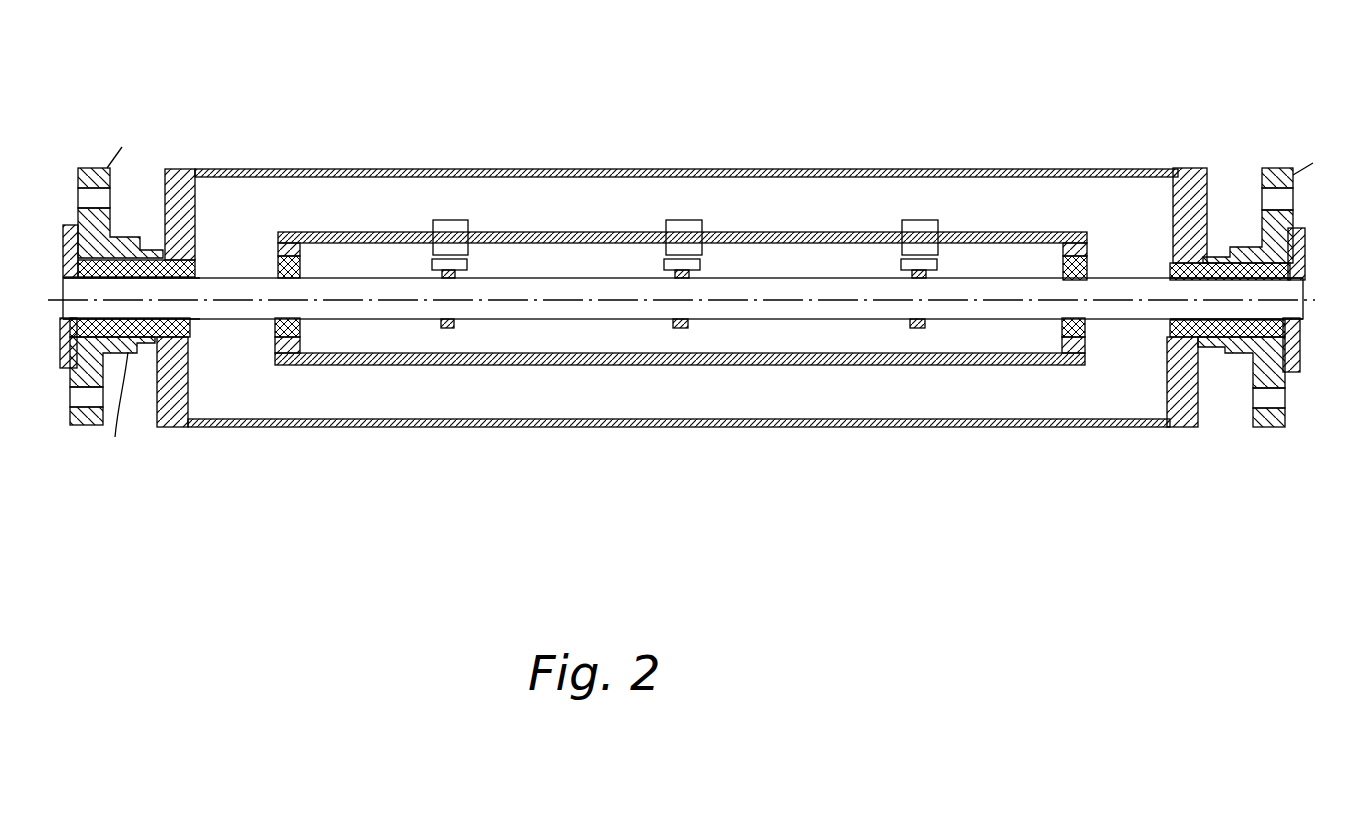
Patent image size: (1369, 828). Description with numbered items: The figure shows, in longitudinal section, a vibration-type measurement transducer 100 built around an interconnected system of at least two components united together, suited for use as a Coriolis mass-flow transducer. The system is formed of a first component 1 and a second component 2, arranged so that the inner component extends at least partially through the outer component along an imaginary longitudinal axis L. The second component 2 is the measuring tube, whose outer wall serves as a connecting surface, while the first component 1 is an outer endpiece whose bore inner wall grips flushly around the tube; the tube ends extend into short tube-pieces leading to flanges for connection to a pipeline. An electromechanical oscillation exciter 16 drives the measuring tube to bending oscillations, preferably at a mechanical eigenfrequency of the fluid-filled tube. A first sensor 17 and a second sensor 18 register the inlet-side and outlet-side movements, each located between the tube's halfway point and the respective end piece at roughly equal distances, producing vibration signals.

The measurement transducer 100 is at (779, 125).
The first component 1 is at (142, 248).
The second component 2 is at (213, 320).
The longitudinal axis L is at (667, 307).
The oscillation exciter 16 is at (715, 221).
The first sensor 17 is at (478, 226).
The second sensor 18 is at (958, 222).